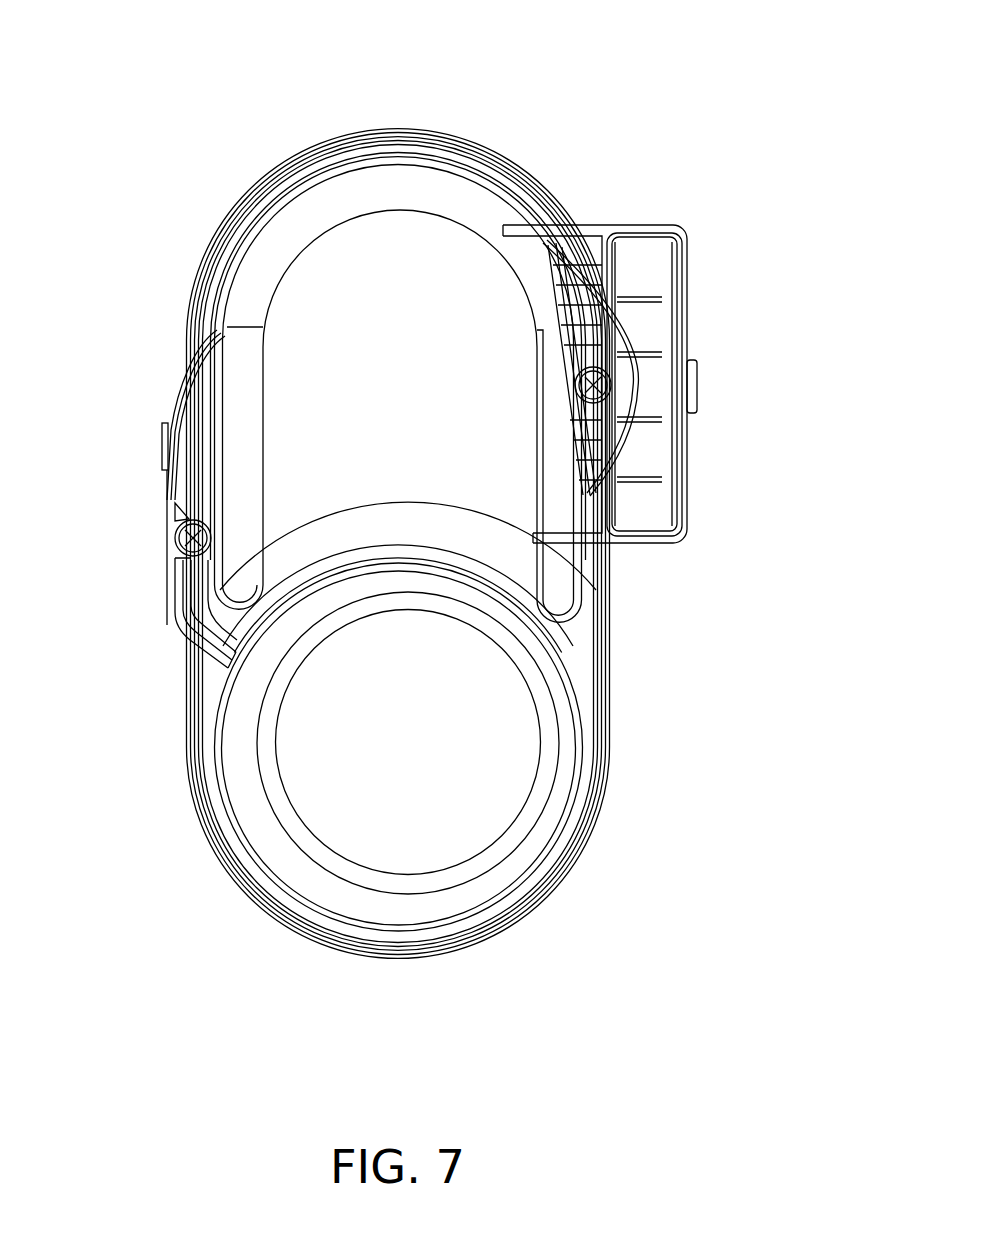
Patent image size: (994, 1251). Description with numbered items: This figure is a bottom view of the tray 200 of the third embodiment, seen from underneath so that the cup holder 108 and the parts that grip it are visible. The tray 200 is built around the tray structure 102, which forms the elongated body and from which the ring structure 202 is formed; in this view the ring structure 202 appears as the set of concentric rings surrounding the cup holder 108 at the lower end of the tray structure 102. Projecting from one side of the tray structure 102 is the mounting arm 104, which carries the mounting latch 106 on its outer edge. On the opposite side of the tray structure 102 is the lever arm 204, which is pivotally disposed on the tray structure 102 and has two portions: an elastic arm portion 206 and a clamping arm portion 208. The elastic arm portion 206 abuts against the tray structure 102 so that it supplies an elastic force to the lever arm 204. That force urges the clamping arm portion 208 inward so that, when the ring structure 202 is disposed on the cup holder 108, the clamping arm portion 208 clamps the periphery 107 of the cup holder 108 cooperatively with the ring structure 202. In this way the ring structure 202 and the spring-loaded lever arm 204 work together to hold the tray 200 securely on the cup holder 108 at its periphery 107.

The tray 200 is at (601, 88).
The tray structure 102 is at (386, 185).
The mounting arm 104 is at (680, 300).
The mounting latch 106 is at (710, 389).
The periphery 107 is at (573, 668).
The cup holder 108 is at (490, 795).
The ring structure 202 is at (193, 767).
The lever arm 204 is at (160, 499).
The elastic arm portion 206 is at (182, 395).
The clamping arm portion 208 is at (190, 613).